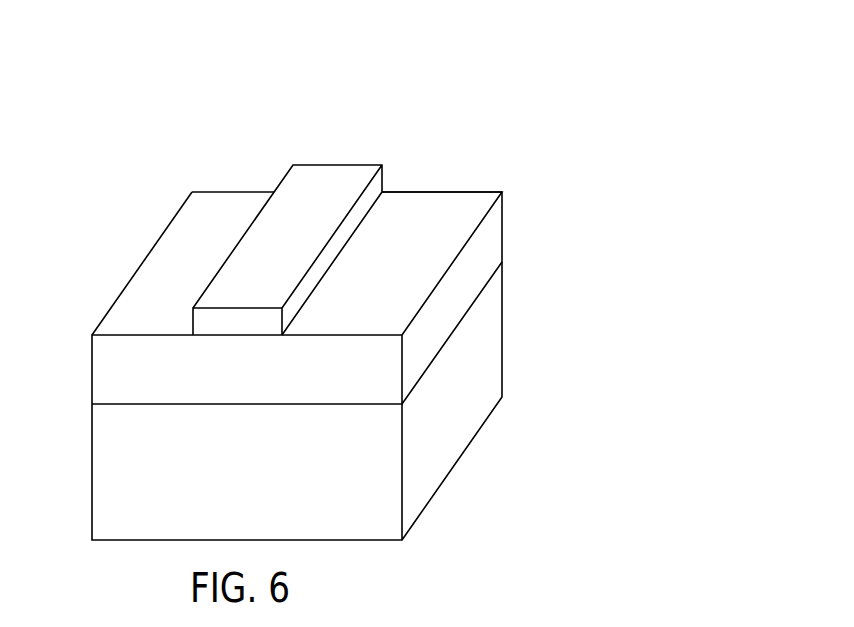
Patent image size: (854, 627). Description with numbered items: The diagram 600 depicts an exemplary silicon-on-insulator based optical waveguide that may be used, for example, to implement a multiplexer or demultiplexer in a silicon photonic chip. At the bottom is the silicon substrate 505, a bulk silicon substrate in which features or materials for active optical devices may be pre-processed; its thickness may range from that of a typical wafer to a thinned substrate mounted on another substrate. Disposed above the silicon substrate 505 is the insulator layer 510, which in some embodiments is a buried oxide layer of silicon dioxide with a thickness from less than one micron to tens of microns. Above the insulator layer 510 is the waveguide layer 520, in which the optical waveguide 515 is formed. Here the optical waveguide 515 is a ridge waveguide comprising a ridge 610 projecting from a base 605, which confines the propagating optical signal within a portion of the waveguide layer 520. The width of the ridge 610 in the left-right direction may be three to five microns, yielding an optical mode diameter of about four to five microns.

The diagram 600 is at (548, 60).
The silicon substrate 505 is at (503, 332).
The insulator layer 510 is at (503, 227).
The optical waveguide 515 is at (338, 165).
The waveguide layer 520 is at (492, 150).
The base 605 is at (168, 272).
The ridge 610 is at (237, 225).